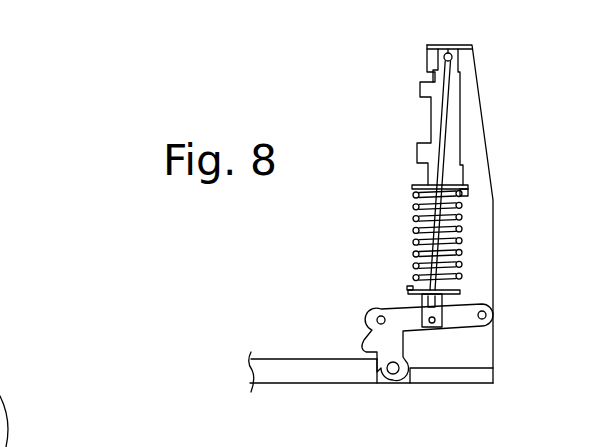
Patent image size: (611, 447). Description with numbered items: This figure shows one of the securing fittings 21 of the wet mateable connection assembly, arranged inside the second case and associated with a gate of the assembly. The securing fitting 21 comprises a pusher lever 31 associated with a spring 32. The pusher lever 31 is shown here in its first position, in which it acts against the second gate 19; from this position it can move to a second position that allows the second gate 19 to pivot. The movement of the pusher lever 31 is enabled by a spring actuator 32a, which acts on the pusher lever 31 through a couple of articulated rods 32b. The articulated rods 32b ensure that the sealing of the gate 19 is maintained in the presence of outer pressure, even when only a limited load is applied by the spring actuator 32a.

The second gate 19 is at (303, 368).
The securing fitting 21 is at (512, 167).
The pusher lever 31 is at (373, 333).
The spring 32 is at (413, 207).
The spring actuator 32a is at (440, 117).
The articulated rods 32b is at (410, 317).